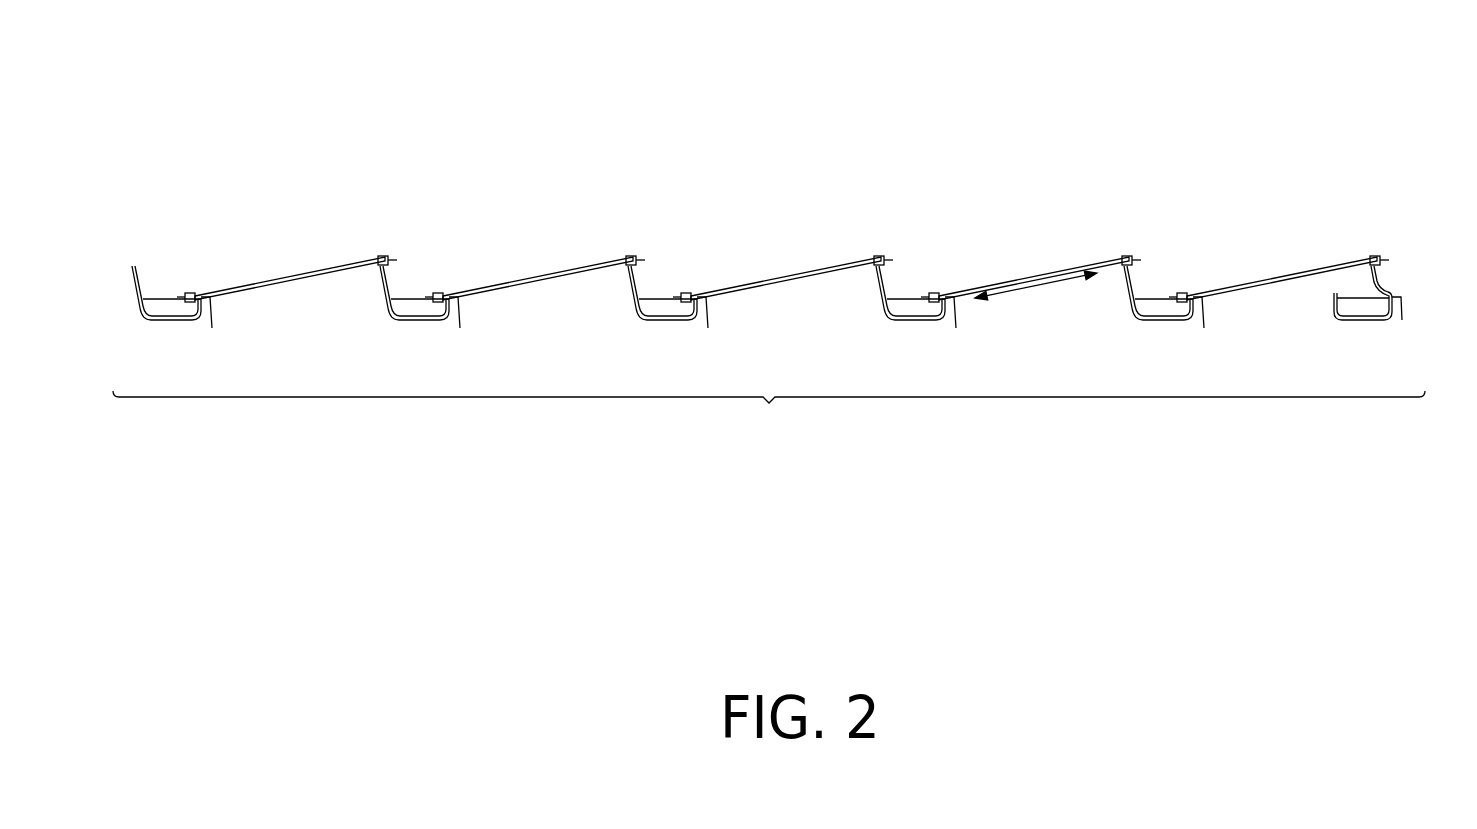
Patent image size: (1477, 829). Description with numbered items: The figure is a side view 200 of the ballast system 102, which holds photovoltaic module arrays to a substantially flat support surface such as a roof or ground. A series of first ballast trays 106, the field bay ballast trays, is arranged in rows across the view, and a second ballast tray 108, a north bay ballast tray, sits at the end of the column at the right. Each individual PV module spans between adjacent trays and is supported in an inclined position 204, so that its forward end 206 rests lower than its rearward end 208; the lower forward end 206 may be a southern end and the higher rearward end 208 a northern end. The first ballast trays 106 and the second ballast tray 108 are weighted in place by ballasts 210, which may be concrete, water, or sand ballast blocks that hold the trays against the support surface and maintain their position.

The ballast system 102 is at (155, 86).
The side view 200 is at (769, 410).
The first ballast trays 106 is at (133, 264).
The forward end 206 is at (937, 270).
The rearward end 208 is at (1119, 247).
The inclined position 204 is at (1063, 285).
The second ballast trays 108 is at (1387, 290).
The ballasts 210 is at (207, 330).